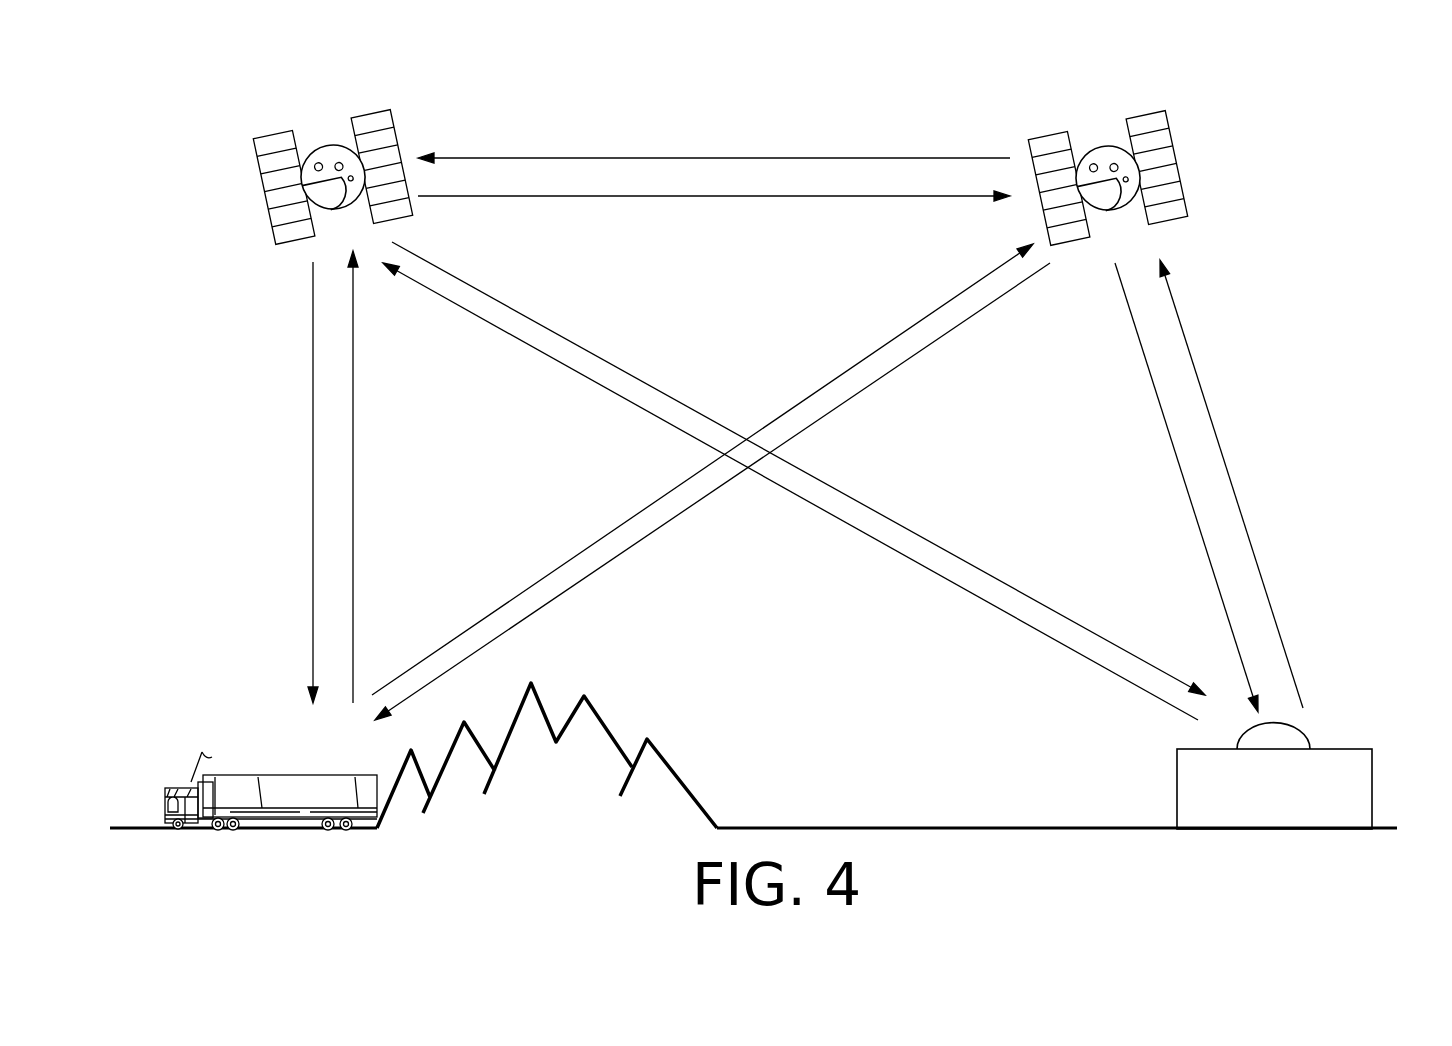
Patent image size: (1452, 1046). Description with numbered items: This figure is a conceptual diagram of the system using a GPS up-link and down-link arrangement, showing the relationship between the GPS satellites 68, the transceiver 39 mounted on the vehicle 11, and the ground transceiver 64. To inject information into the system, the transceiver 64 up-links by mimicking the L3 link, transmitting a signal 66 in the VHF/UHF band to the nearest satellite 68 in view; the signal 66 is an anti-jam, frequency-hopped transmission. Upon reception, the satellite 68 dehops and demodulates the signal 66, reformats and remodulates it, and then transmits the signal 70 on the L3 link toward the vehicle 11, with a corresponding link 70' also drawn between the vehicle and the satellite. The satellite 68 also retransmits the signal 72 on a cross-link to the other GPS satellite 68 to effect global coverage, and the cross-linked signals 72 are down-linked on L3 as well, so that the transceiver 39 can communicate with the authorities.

The satellite 68 is at (282, 205).
The signal 72 is at (790, 158).
The signal 70 is at (711, 482).
The communication link between vehicle and satellite 70' is at (299, 477).
The signal 66 is at (1019, 620).
The transceiver 64 is at (1328, 760).
The vehicle 11 is at (283, 803).
The transceiver 39 is at (188, 766).